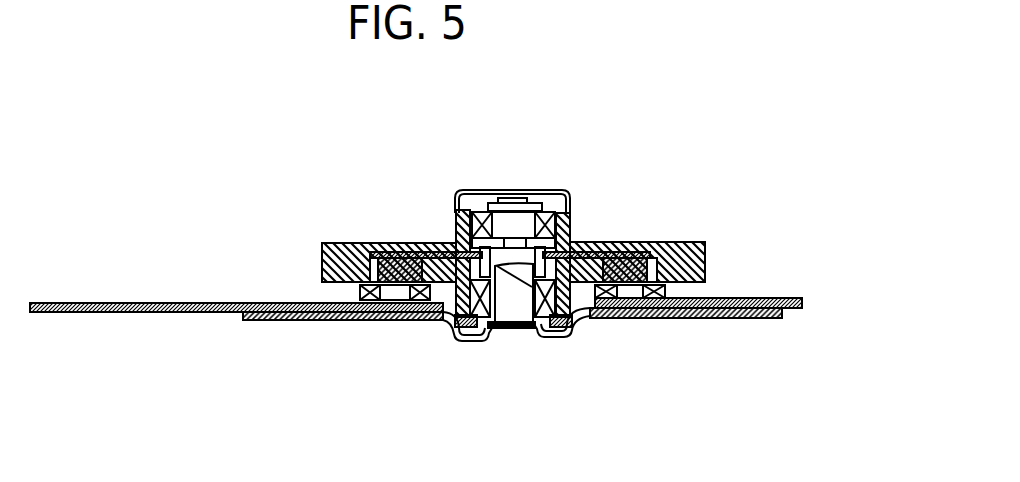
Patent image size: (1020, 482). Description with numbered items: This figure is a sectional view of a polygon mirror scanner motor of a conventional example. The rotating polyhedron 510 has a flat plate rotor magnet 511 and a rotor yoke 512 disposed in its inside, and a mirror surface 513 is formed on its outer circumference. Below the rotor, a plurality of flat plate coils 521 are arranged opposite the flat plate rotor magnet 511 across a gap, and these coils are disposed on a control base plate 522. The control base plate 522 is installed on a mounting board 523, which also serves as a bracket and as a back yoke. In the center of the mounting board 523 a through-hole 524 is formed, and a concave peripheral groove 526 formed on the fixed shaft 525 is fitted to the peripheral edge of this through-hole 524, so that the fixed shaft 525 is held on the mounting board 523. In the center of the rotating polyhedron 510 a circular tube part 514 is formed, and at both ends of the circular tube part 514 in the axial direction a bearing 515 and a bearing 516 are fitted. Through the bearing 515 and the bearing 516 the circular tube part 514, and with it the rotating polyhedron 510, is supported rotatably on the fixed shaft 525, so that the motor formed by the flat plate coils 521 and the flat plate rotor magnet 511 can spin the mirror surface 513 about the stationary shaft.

The rotating polyhedron 510 is at (687, 241).
The flat plate rotor magnet 511 is at (391, 252).
The rotor yoke 512 is at (322, 259).
The mirror surface 513 is at (705, 260).
The circular tube part 514 is at (567, 223).
The bearing 515 is at (538, 217).
The bearing 516 is at (575, 337).
The flat plate coil 521 is at (361, 321).
The control base plate 522 is at (108, 302).
The mounting board 523 is at (718, 319).
The through-hole 524 is at (474, 322).
The fixed shaft 525 is at (513, 300).
The concave peripheral groove 526 is at (542, 328).